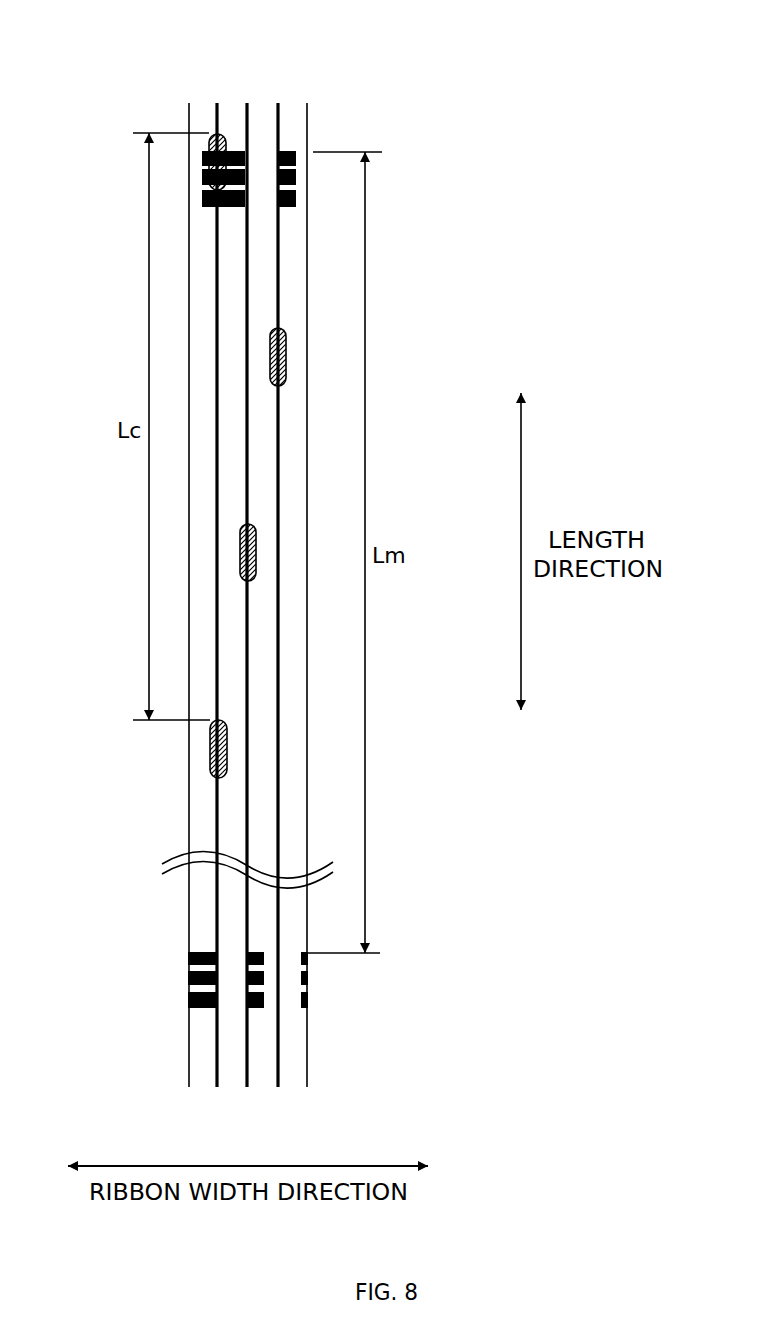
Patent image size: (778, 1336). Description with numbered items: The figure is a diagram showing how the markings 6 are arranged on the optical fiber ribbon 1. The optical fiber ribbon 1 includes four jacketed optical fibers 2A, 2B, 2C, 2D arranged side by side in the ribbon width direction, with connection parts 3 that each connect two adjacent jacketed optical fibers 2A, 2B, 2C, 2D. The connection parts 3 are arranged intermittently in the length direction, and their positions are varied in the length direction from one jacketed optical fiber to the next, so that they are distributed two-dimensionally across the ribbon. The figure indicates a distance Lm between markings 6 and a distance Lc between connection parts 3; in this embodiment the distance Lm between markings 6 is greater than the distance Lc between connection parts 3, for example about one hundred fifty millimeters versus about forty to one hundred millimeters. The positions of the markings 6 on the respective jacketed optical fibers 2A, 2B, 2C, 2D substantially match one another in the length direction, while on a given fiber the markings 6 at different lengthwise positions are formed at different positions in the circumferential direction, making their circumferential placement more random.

The optical fiber ribbon 1 is at (240, 581).
The jacketed optical fiber 2A is at (201, 106).
The jacketed optical fiber 2B is at (233, 107).
The jacketed optical fiber 2C is at (264, 107).
The jacketed optical fiber 2D is at (293, 107).
The connection part 3 is at (286, 350).
The marking 6 is at (284, 152).